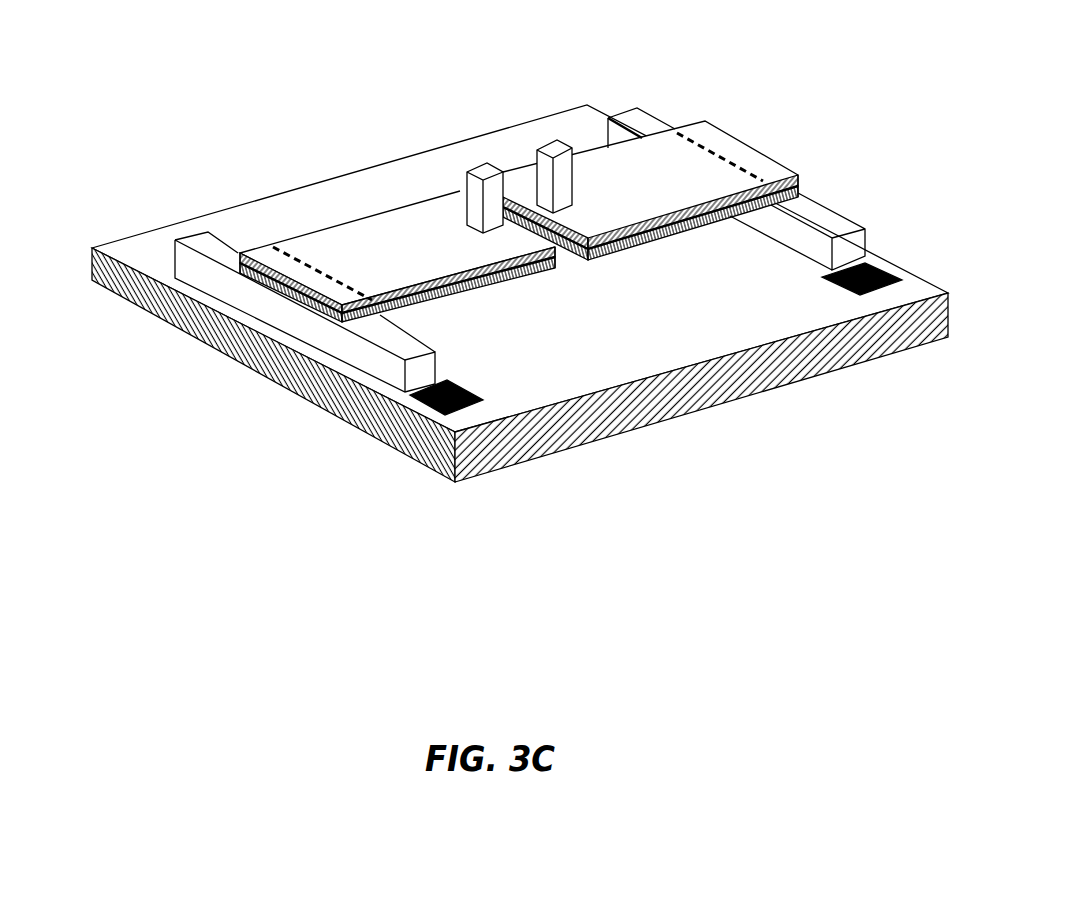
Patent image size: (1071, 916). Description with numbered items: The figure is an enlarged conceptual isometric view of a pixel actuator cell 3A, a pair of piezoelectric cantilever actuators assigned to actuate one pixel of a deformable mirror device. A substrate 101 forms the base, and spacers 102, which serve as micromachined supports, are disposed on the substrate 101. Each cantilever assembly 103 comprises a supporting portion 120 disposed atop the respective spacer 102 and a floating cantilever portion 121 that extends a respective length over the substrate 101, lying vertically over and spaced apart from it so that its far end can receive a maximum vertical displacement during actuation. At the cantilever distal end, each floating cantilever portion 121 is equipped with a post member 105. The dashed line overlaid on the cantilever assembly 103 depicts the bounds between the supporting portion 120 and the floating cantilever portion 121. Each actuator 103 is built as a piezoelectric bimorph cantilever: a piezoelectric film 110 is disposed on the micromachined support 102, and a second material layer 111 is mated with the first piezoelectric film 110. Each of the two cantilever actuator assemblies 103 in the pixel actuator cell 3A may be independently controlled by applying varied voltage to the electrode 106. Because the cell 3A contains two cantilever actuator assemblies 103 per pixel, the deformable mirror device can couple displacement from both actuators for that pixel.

The pixel actuator cell 3A is at (277, 83).
The substrate 101 is at (488, 317).
The spacer 102 is at (230, 290).
The cantilever assembly 103 is at (308, 312).
The post member 105 is at (483, 170).
The electrode 106 is at (367, 445).
The piezoelectric film 110 is at (480, 282).
The second material layer 111 is at (527, 278).
The supporting portion 120 is at (385, 354).
The floating cantilever portion 121 is at (388, 232).